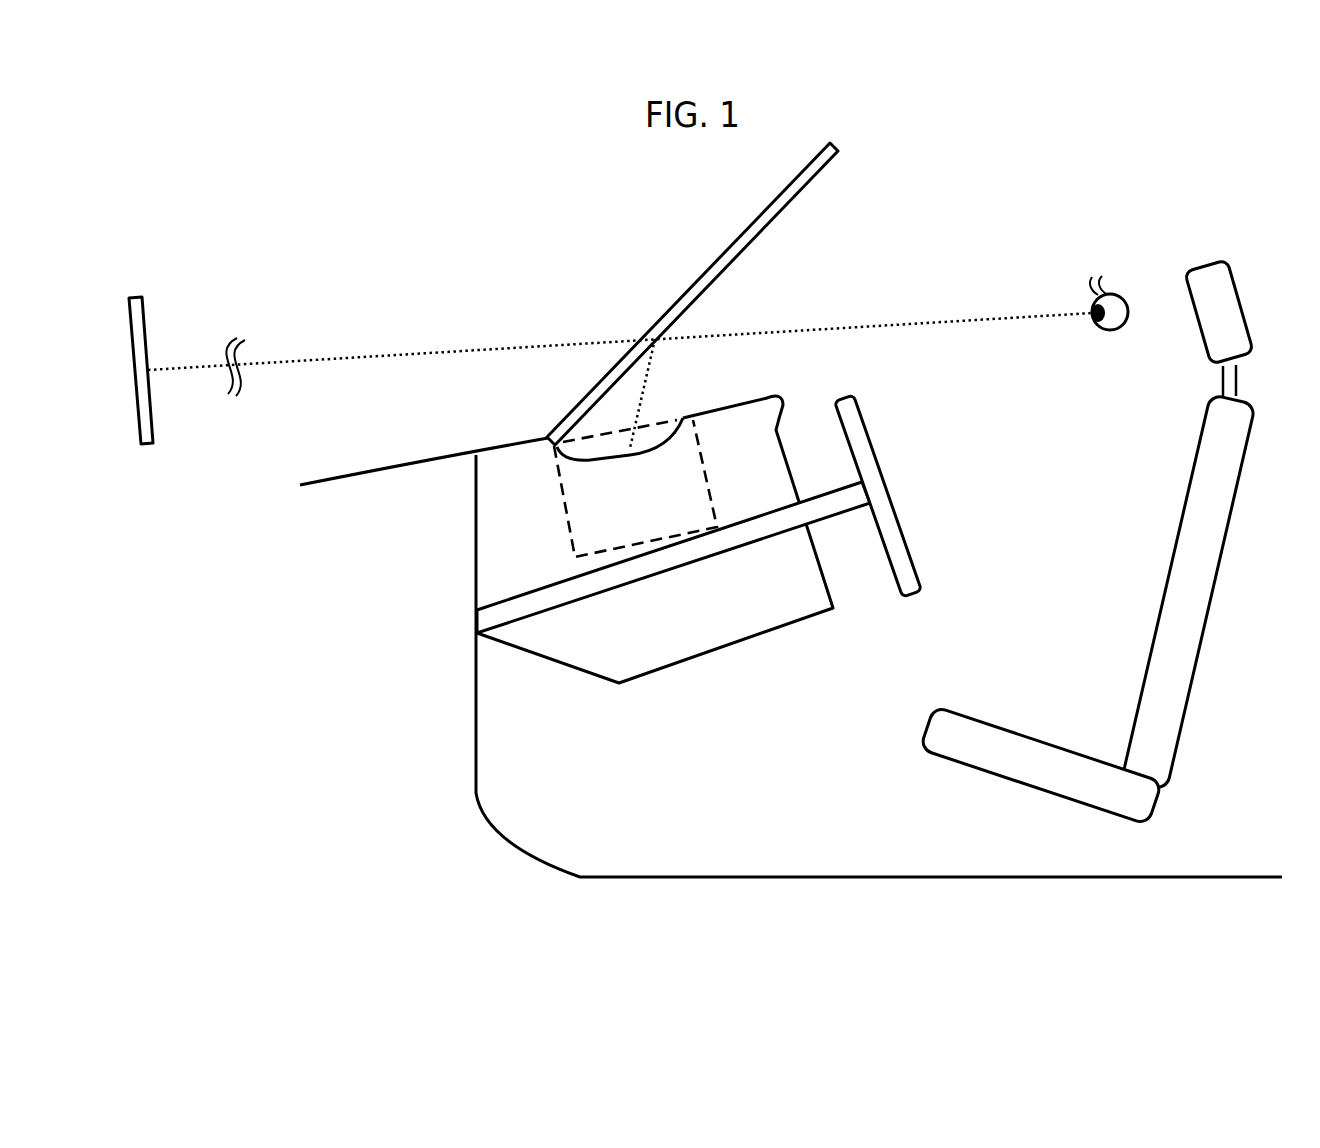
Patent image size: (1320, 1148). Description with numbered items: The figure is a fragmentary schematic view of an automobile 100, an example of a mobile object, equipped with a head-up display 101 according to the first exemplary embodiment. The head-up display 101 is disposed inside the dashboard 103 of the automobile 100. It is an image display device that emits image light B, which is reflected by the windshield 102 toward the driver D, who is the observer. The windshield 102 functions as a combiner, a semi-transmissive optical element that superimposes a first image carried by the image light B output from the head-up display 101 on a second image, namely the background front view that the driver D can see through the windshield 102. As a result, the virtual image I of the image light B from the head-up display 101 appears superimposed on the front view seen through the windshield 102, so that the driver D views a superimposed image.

The automobile 100 is at (687, 875).
The head-up display 101 is at (556, 476).
The windshield 102 is at (743, 232).
The dashboard 103 is at (772, 407).
The image light B is at (646, 388).
The virtual image I is at (145, 312).
The driver D is at (1112, 328).